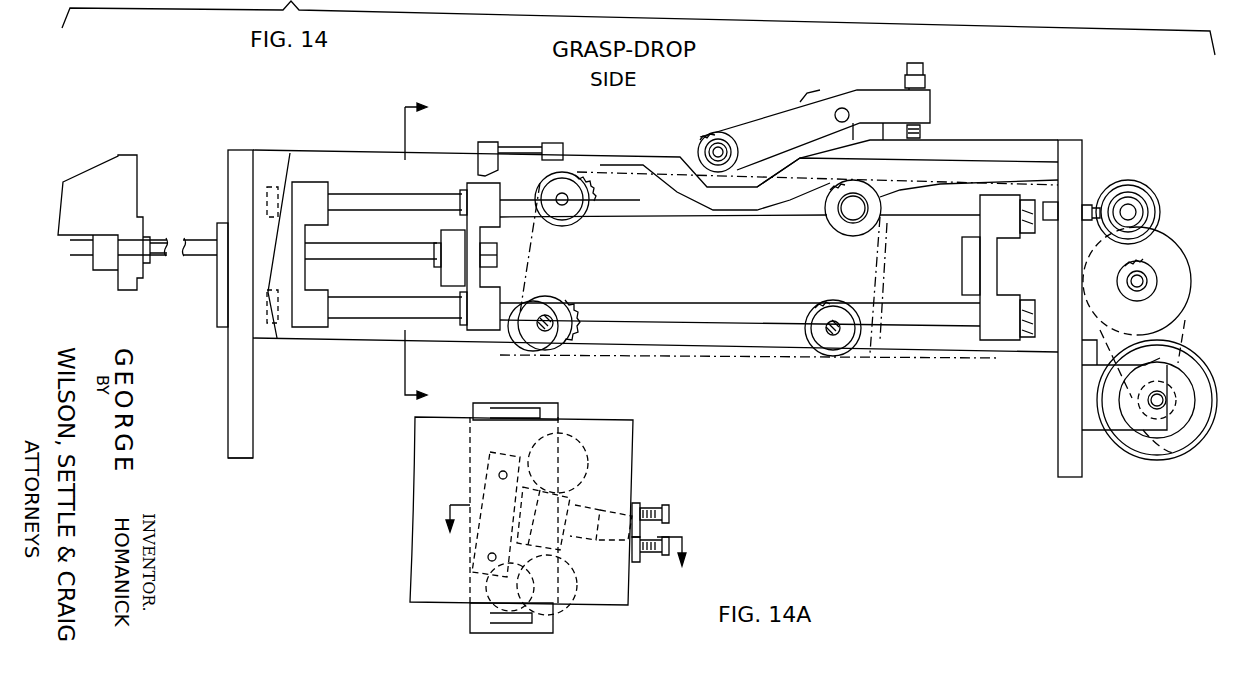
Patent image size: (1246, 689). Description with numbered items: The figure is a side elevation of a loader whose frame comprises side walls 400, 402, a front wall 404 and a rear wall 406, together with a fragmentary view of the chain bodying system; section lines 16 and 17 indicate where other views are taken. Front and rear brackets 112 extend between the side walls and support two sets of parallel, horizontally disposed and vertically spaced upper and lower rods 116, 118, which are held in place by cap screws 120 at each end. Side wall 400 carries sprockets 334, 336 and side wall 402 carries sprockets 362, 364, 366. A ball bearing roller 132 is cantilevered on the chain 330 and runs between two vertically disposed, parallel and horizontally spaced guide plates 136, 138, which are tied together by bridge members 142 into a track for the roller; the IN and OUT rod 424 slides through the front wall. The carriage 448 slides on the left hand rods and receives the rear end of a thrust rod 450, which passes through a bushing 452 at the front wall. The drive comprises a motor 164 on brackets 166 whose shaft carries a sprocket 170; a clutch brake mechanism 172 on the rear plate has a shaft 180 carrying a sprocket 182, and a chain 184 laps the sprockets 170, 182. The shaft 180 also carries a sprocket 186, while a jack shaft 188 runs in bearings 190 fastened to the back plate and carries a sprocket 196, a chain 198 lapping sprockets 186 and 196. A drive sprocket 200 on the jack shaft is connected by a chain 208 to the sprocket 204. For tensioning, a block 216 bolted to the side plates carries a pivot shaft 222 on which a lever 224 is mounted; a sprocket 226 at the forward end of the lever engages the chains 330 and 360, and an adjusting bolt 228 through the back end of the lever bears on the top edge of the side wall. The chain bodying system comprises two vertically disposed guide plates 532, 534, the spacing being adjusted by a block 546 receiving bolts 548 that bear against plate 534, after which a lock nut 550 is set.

In FIG. 14, the section line 16 is at (432, 251).
In FIG. 14A, the section line 17 is at (563, 550).
In FIG. 14, the bracket 112 is at (320, 183).
In FIG. 14, the upper rod 116 is at (405, 192).
In FIG. 14, the lower rod 118 is at (335, 302).
In FIG. 14, the cap screw 120 is at (490, 248).
In FIG. 14A, the ball bearing roller 132 is at (490, 592).
In FIG. 14, the guide plate 136 is at (478, 142).
In FIG. 14, the guide plate 138 is at (550, 143).
In FIG. 14, the bridge member 142 is at (525, 147).
In FIG. 14, the motor 164 is at (1155, 455).
In FIG. 14, the bracket 166 is at (1095, 430).
In FIG. 14, the sprocket 170 is at (1170, 450).
In FIG. 14, the clutch brake mechanism 172 is at (1193, 312).
In FIG. 14, the shaft 180 is at (1137, 292).
In FIG. 14, the sprocket 182 is at (1192, 283).
In FIG. 14, the chain 184 is at (1124, 385).
In FIG. 14, the sprocket 186 is at (1157, 281).
In FIG. 14, the jack shaft 188 is at (1130, 212).
In FIG. 14, the bearing 190 is at (1112, 190).
In FIG. 14, the sprocket 196 is at (1152, 202).
In FIG. 14, the chain 198 is at (1170, 245).
In FIG. 14, the drive sprocket 200 is at (1130, 186).
In FIG. 14, the sprocket 204 is at (825, 200).
In FIG. 14, the chain 208 is at (900, 230).
In FIG. 14, the block 216 is at (805, 90).
In FIG. 14, the pivot shaft 222 is at (842, 108).
In FIG. 14, the lever 224 is at (760, 125).
In FIG. 14, the sprocket 226 is at (700, 133).
In FIG. 14, the adjusting bolt 228 is at (924, 66).
In FIG. 14, the chain 330 is at (885, 277).
In FIG. 14, the sprocket 334 is at (575, 330).
In FIG. 14A, the sprocket 334 is at (555, 610).
In FIG. 14, the sprocket 336 is at (860, 353).
In FIG. 14, the chain 360 is at (712, 352).
In FIG. 14, the sprocket 362 is at (575, 222).
In FIG. 14A, the sprocket 362 is at (570, 450).
In FIG. 14, the sprocket 364 is at (540, 296).
In FIG. 14A, the sprocket 364 is at (565, 585).
In FIG. 14, the sprocket 366 is at (845, 292).
In FIG. 14, the side wall 400 is at (322, 152).
In FIG. 14, the side wall 402 is at (262, 150).
In FIG. 14A, the side wall 402 is at (415, 455).
In FIG. 14, the front wall 404 is at (228, 400).
In FIG. 14, the rear wall 406 is at (1058, 462).
In FIG. 14, the IN and OUT rod 424 is at (167, 241).
In FIG. 14, the carriage 448 is at (465, 290).
In FIG. 14, the thrust rod 450 is at (183, 255).
In FIG. 14, the bushing 452 is at (223, 278).
In FIG. 14A, the guide plate 532 is at (490, 490).
In FIG. 14A, the guide plate 534 is at (573, 490).
In FIG. 14A, the block 546 is at (634, 503).
In FIG. 14A, the bolt 548 is at (668, 527).
In FIG. 14A, the lock nut 550 is at (665, 513).